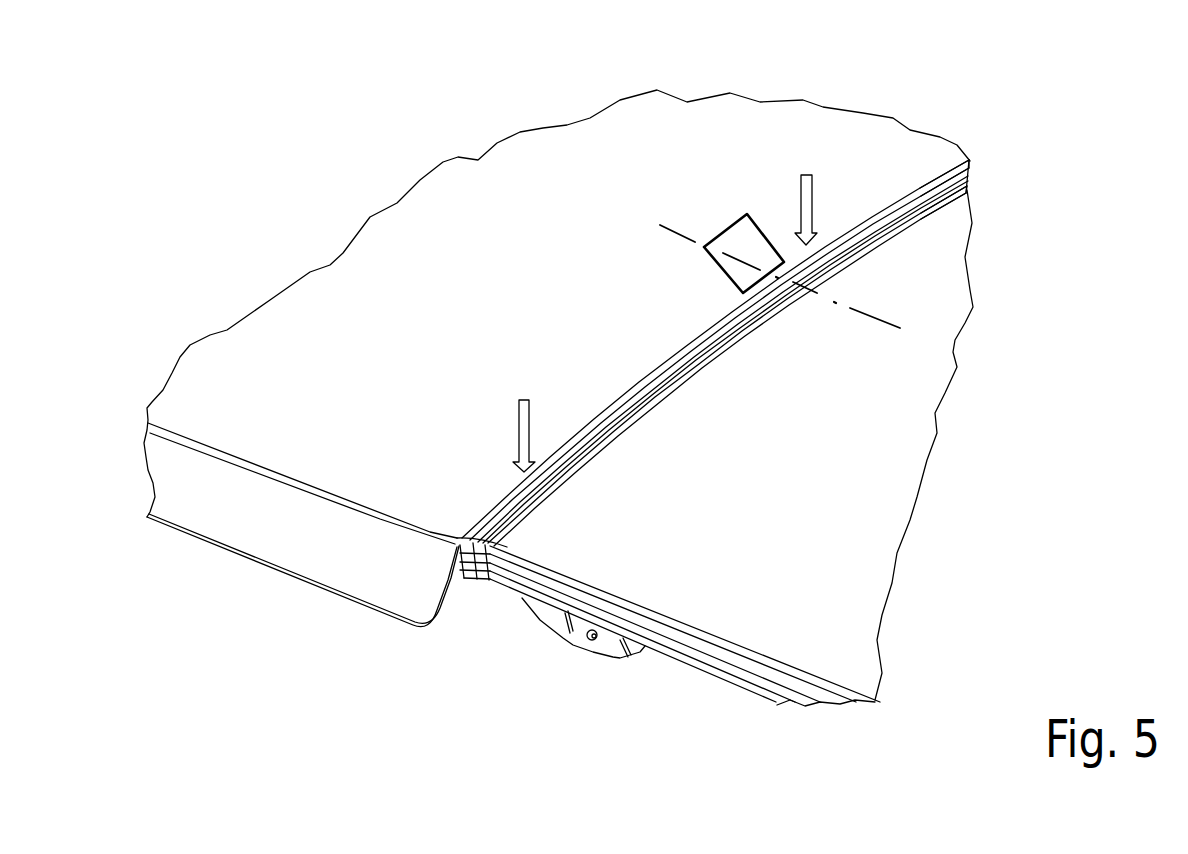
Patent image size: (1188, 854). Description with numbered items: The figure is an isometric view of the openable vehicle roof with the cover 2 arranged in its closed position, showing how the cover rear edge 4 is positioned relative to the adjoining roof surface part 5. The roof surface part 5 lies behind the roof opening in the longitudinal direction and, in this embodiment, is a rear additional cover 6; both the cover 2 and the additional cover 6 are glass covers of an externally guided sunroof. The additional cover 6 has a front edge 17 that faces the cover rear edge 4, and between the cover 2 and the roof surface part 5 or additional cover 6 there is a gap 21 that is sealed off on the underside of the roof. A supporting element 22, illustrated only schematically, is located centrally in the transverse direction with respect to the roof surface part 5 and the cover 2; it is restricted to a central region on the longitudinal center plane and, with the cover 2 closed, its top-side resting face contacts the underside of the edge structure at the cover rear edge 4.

The cover 2 is at (481, 262).
The cover rear edge 4 is at (930, 188).
The roof surface part 5 is at (819, 451).
The additional cover 6 is at (852, 451).
The front edge 17 is at (918, 210).
The gap 21 is at (962, 181).
The supporting element 22 is at (743, 252).